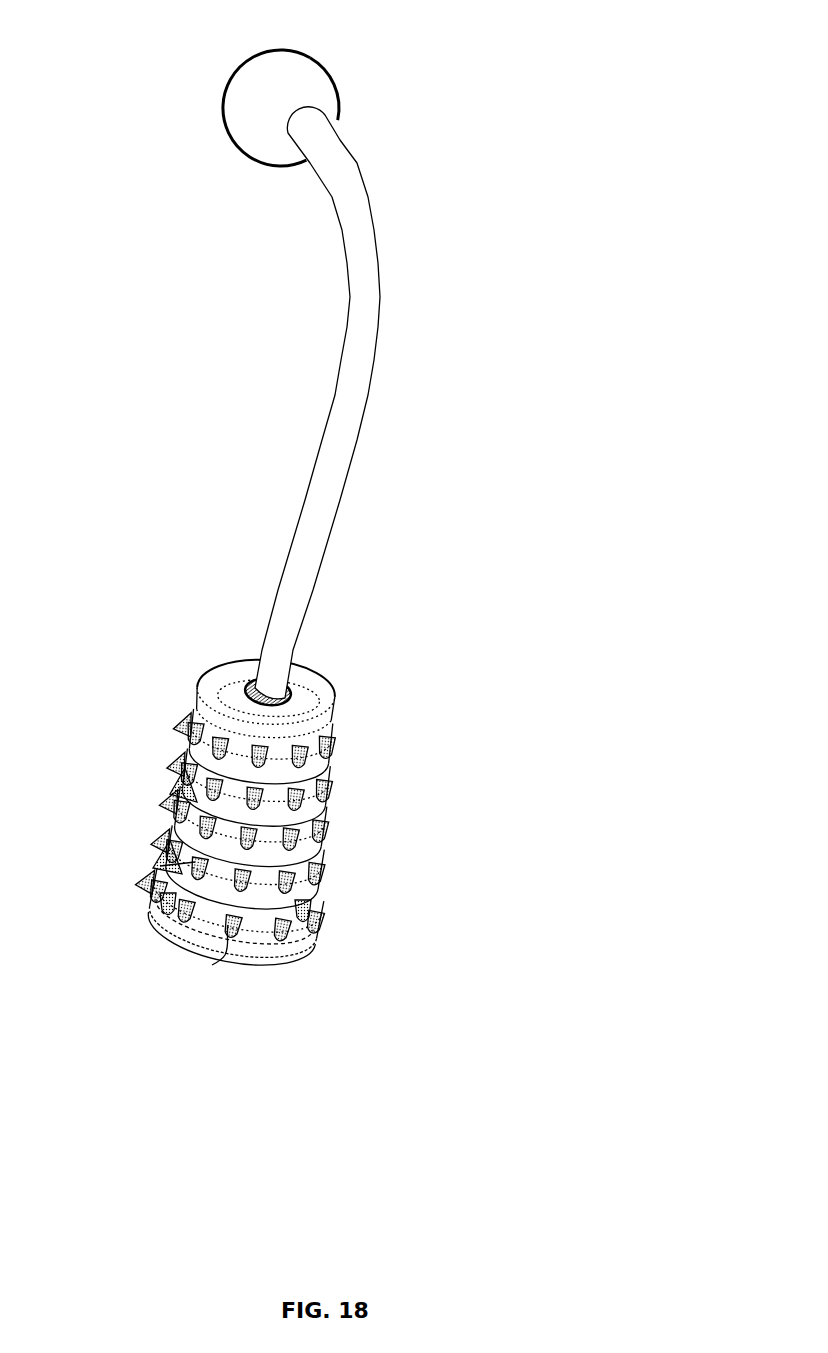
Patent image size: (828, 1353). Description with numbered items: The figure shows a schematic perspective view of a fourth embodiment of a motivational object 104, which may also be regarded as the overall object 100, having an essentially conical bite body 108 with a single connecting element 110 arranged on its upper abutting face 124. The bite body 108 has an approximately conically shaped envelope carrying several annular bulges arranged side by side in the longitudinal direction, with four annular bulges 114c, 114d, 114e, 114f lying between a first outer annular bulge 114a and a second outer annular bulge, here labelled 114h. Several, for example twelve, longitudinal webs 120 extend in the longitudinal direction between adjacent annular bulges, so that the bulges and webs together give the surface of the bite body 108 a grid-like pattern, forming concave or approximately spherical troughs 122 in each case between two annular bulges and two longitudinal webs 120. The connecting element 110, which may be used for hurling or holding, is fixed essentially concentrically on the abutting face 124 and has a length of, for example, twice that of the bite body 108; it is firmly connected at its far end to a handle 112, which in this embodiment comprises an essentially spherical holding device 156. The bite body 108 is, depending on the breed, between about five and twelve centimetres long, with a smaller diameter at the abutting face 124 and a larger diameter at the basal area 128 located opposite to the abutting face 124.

The brush assembly 100 is at (563, 371).
The motivational object 104 is at (590, 434).
The bite body 108 is at (191, 794).
The connecting element 110 is at (380, 355).
The handle 112 is at (296, 78).
The first outer annular bulge 114a is at (326, 716).
The annular bulge 114c is at (330, 760).
The annular bulge 114d is at (325, 806).
The annular bulge 114e is at (318, 851).
The annular bulge 114f is at (306, 891).
The bottom bristle ring 114h is at (307, 928).
The longitudinal web 120 is at (305, 917).
The trough 122 is at (160, 866).
The abutting face 124 is at (306, 684).
The basal area 128 is at (272, 956).
The spherical holding device 156 is at (330, 76).